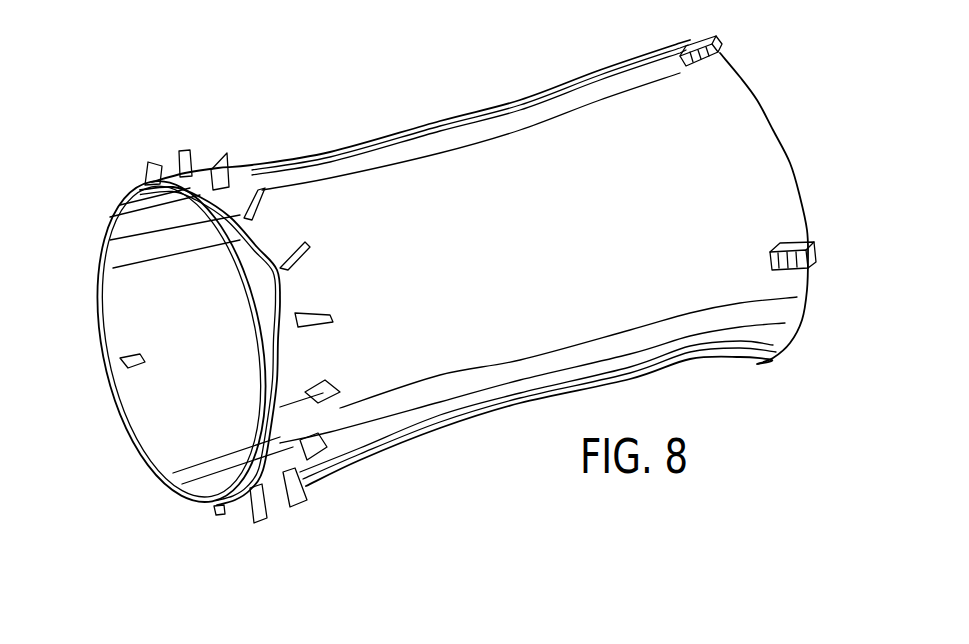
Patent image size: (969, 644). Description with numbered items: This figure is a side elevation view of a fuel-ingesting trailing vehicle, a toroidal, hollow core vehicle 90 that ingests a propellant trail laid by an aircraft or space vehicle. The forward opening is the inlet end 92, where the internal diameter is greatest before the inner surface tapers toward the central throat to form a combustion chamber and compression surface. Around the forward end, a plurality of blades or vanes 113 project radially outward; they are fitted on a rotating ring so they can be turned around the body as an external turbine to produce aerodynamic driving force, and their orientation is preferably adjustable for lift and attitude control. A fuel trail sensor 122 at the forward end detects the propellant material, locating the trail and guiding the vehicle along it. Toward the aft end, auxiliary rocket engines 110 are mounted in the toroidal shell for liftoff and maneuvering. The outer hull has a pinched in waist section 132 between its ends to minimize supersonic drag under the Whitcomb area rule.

The hollow core vehicle 90 is at (439, 122).
The inlet end 92 is at (163, 445).
The auxiliary rocket engines 110 is at (722, 50).
The blades or vanes 113 is at (330, 313).
The fuel trail sensors 122 is at (117, 360).
The pinched in waist section 132 is at (360, 147).